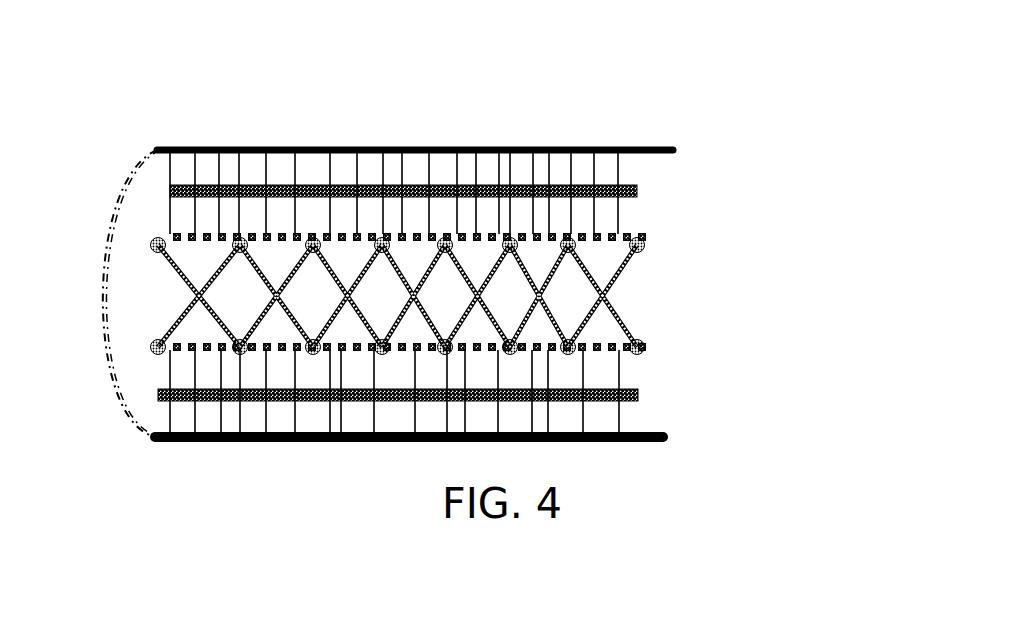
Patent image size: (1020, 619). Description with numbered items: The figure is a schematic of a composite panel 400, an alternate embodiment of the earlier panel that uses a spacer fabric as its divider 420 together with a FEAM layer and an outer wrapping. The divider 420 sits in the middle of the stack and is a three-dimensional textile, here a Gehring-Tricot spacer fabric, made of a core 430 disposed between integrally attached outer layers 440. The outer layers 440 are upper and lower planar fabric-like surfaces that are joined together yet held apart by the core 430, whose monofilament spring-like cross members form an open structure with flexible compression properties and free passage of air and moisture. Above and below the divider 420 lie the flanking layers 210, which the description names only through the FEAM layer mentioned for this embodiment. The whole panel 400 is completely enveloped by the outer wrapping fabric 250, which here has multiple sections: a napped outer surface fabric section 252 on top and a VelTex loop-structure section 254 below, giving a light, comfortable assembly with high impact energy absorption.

The composite panel 400 is at (378, 112).
The outer wrapping fabric 250 is at (68, 375).
The section 252 is at (240, 148).
The section 254 is at (203, 442).
The face sheet ply layer 210 is at (637, 170).
The divider 420 is at (533, 316).
The core 430 is at (632, 313).
The outer layers 440 is at (645, 229).